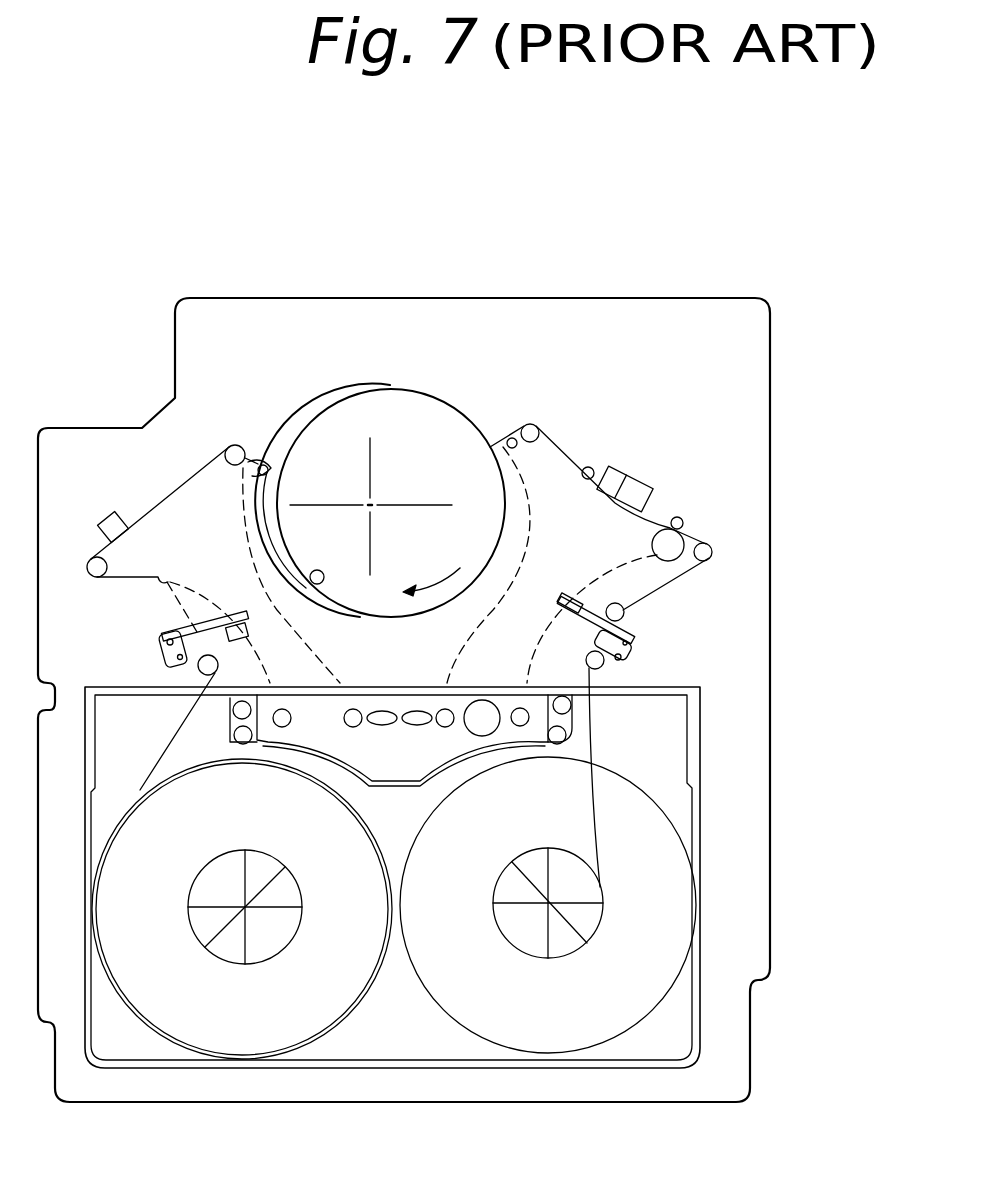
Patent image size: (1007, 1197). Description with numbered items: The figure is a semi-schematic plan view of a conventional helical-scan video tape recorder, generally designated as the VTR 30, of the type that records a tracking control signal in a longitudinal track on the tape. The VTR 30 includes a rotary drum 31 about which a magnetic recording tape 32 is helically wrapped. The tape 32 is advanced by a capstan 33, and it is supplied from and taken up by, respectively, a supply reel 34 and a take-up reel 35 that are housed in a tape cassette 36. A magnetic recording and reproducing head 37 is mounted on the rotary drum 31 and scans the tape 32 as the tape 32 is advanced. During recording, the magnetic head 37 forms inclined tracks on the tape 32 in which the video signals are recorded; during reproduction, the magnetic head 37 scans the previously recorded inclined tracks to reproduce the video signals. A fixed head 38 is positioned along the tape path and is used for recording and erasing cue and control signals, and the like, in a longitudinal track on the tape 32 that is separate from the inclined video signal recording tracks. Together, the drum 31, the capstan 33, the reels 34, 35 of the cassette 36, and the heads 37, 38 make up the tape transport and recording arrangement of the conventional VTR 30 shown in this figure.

The VTR 30 is at (620, 297).
The rotary drum 31 is at (430, 392).
The magnetic recording tape 32 is at (553, 441).
The capstan 33 is at (680, 519).
The supply reel 34 is at (290, 1053).
The take-up reel 35 is at (642, 1025).
The tape cassette 36 is at (700, 1030).
The magnetic recording and reproducing head 37 is at (316, 571).
The fixed head 38 is at (628, 466).